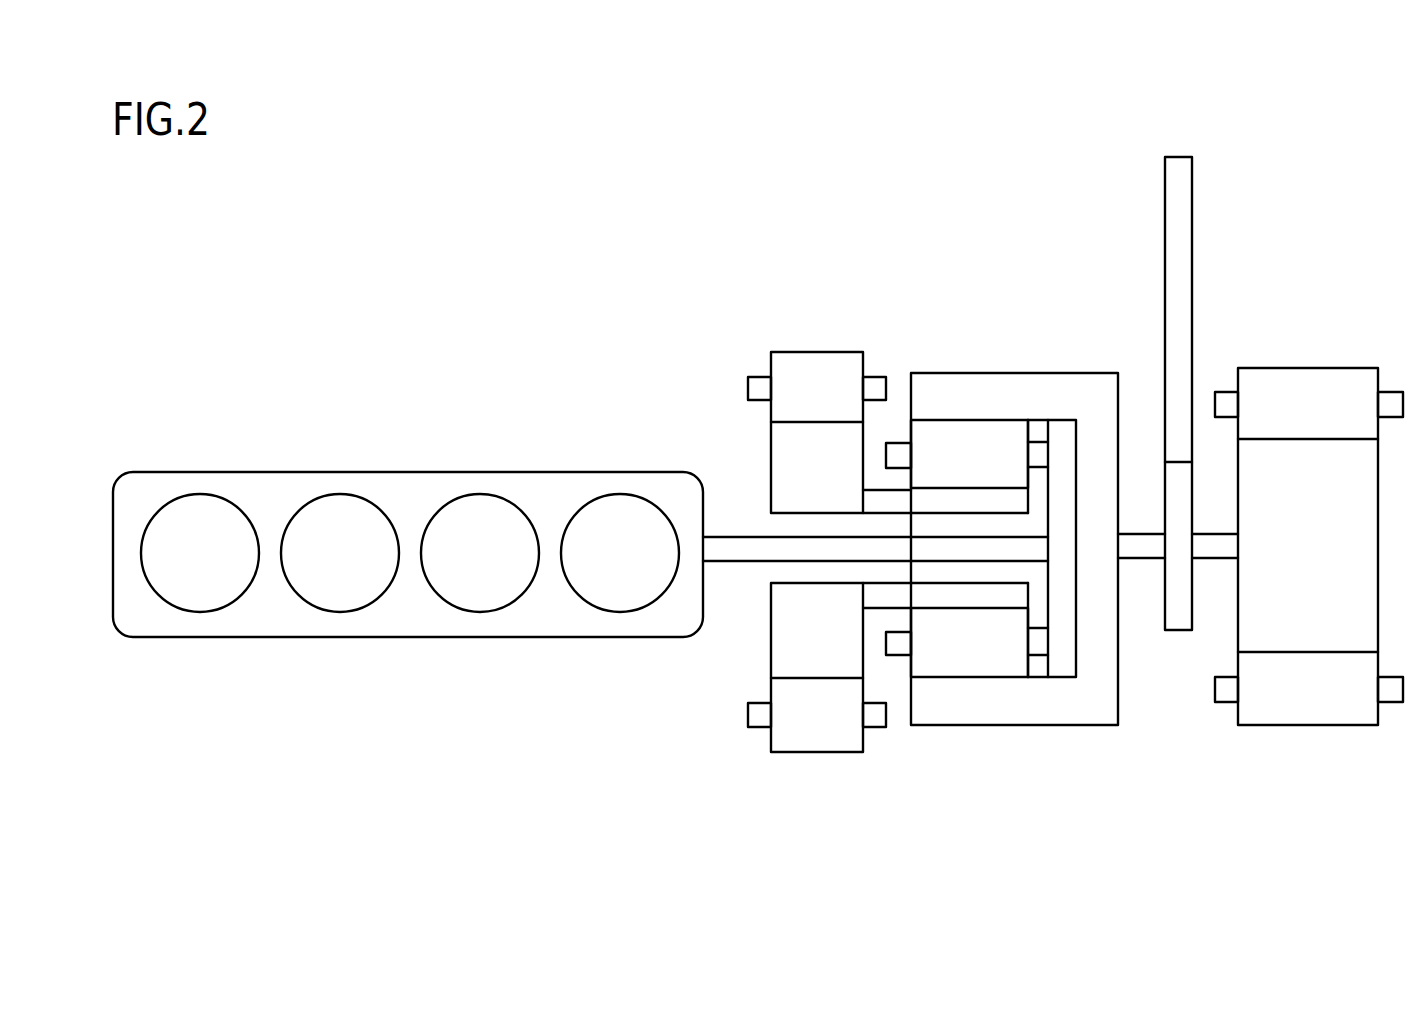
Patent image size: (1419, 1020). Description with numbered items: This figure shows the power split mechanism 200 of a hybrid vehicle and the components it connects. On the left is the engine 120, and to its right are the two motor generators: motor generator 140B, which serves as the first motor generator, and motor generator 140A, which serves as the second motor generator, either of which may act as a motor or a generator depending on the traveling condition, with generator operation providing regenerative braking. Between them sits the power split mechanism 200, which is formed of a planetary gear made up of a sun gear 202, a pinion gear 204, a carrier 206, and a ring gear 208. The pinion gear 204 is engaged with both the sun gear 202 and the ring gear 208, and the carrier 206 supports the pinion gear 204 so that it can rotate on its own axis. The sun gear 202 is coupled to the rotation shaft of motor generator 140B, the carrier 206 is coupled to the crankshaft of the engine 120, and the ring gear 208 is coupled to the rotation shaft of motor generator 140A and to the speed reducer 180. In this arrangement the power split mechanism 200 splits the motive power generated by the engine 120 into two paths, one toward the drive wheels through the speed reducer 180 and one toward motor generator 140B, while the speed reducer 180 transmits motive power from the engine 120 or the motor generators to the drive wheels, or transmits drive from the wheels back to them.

The engine 120 is at (412, 470).
The motor generator 140B is at (817, 352).
The motor generator 140A is at (1308, 368).
The speed reducer 180 is at (1202, 130).
The power split mechanism 200 is at (1000, 544).
The sun gear 202 is at (950, 608).
The pinion gear 204 is at (990, 678).
The carrier 206 is at (1047, 583).
The ring gear 208 is at (1076, 725).